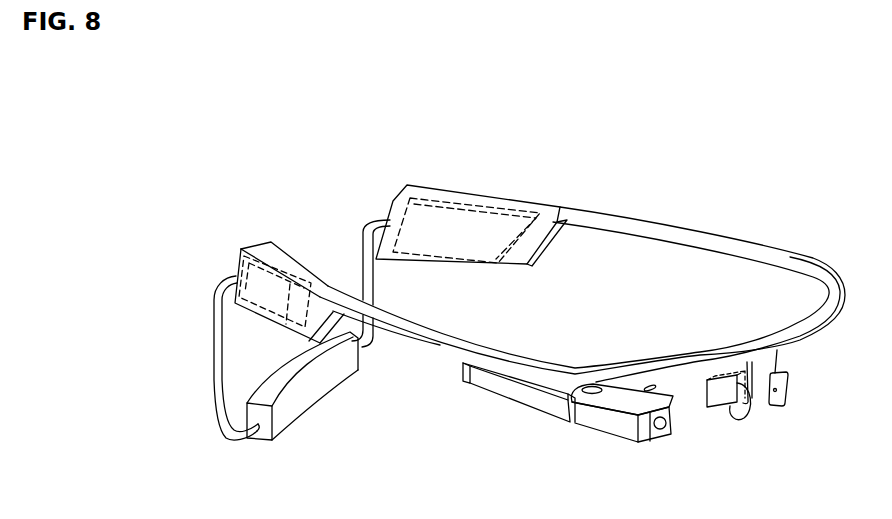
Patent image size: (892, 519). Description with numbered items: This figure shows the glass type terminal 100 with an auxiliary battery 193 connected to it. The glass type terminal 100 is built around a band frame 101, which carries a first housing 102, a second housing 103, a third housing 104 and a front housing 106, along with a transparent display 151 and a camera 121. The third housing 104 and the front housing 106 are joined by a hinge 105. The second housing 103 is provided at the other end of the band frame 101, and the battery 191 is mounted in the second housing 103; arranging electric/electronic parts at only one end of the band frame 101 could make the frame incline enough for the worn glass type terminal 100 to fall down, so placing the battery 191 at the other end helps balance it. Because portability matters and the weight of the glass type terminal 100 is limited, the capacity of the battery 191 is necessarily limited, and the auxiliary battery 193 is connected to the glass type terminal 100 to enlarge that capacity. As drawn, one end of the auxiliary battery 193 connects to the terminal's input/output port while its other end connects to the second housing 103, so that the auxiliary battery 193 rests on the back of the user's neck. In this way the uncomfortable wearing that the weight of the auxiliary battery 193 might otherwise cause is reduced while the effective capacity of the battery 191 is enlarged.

The glass type terminal 100 is at (300, 73).
The band frame 101 is at (767, 244).
The first housing 102 is at (253, 243).
The second housing 103 is at (443, 190).
The third housing 104 is at (537, 407).
The hinge 105 is at (587, 386).
The front housing 106 is at (607, 433).
The camera 121 is at (658, 431).
The transparent display 151 is at (717, 408).
The battery 191 is at (495, 213).
The auxiliary battery 193 is at (320, 388).